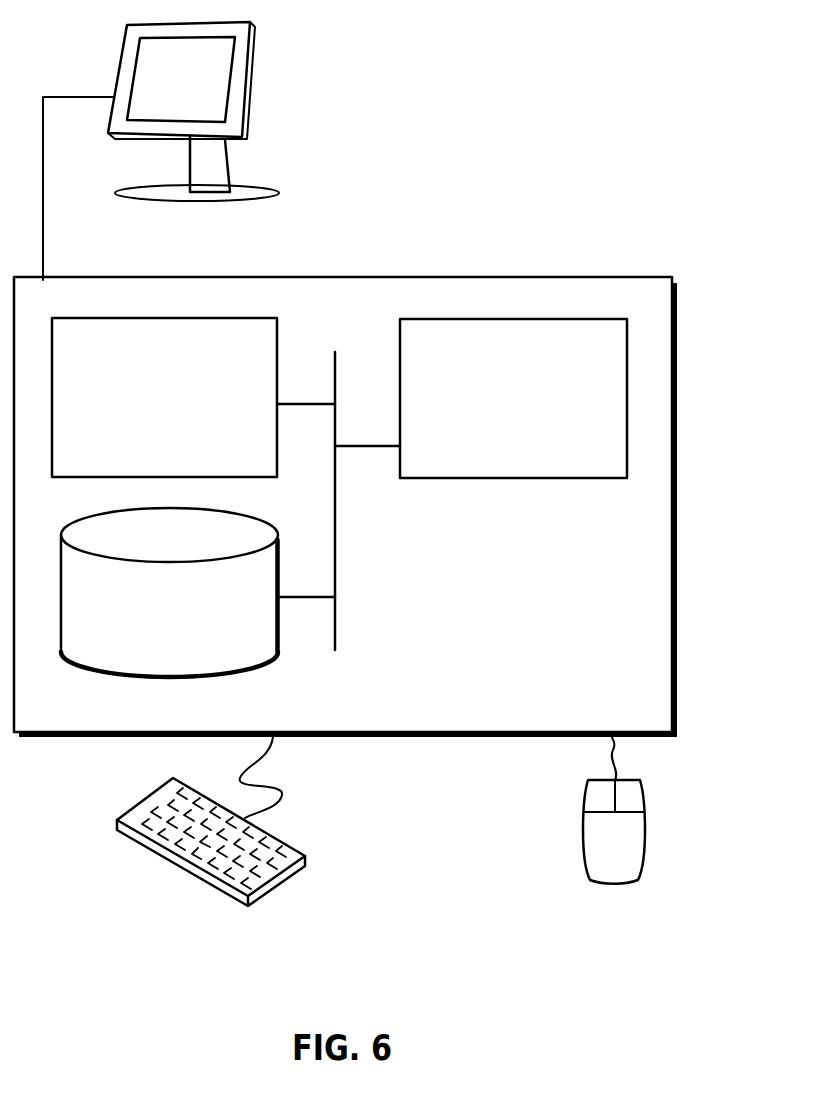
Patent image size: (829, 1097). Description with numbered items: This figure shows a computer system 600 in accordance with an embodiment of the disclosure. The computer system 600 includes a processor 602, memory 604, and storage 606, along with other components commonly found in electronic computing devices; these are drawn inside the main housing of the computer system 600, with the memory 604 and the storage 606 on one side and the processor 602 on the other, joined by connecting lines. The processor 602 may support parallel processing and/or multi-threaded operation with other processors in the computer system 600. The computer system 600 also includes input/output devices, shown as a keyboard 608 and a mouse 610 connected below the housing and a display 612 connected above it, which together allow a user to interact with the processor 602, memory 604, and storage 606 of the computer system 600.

The computer system 600 is at (388, 257).
The processor 602 is at (537, 409).
The memory 604 is at (188, 409).
The storage 606 is at (193, 619).
The keyboard 608 is at (133, 840).
The mouse 610 is at (634, 851).
The display 612 is at (161, 151).